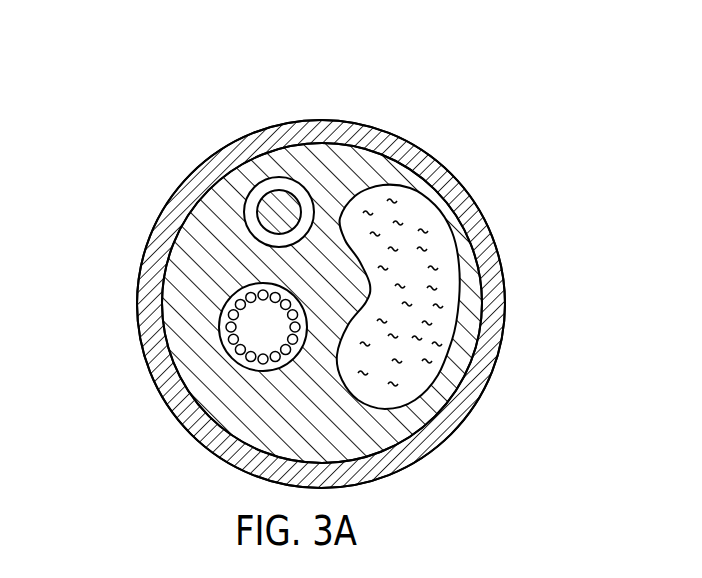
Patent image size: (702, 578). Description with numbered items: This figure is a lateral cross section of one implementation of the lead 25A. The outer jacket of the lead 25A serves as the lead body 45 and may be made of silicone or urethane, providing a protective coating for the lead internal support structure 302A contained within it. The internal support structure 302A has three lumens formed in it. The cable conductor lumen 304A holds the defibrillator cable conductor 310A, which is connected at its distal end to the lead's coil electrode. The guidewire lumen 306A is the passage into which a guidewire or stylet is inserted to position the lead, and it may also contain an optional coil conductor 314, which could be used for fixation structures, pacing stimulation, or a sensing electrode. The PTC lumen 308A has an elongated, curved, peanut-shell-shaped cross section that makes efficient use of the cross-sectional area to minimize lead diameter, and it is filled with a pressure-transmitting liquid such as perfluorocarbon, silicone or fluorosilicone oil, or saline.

The lead 25A is at (123, 164).
The lead body 45 is at (395, 143).
The lead internal support structure 302A is at (182, 245).
The cable conductor lumen 304A is at (263, 182).
The defibrillator cable conductor 310A is at (282, 203).
The guidewire lumen 306A is at (245, 327).
The coil conductor 314 is at (257, 357).
The PTC lumen 308A is at (445, 330).